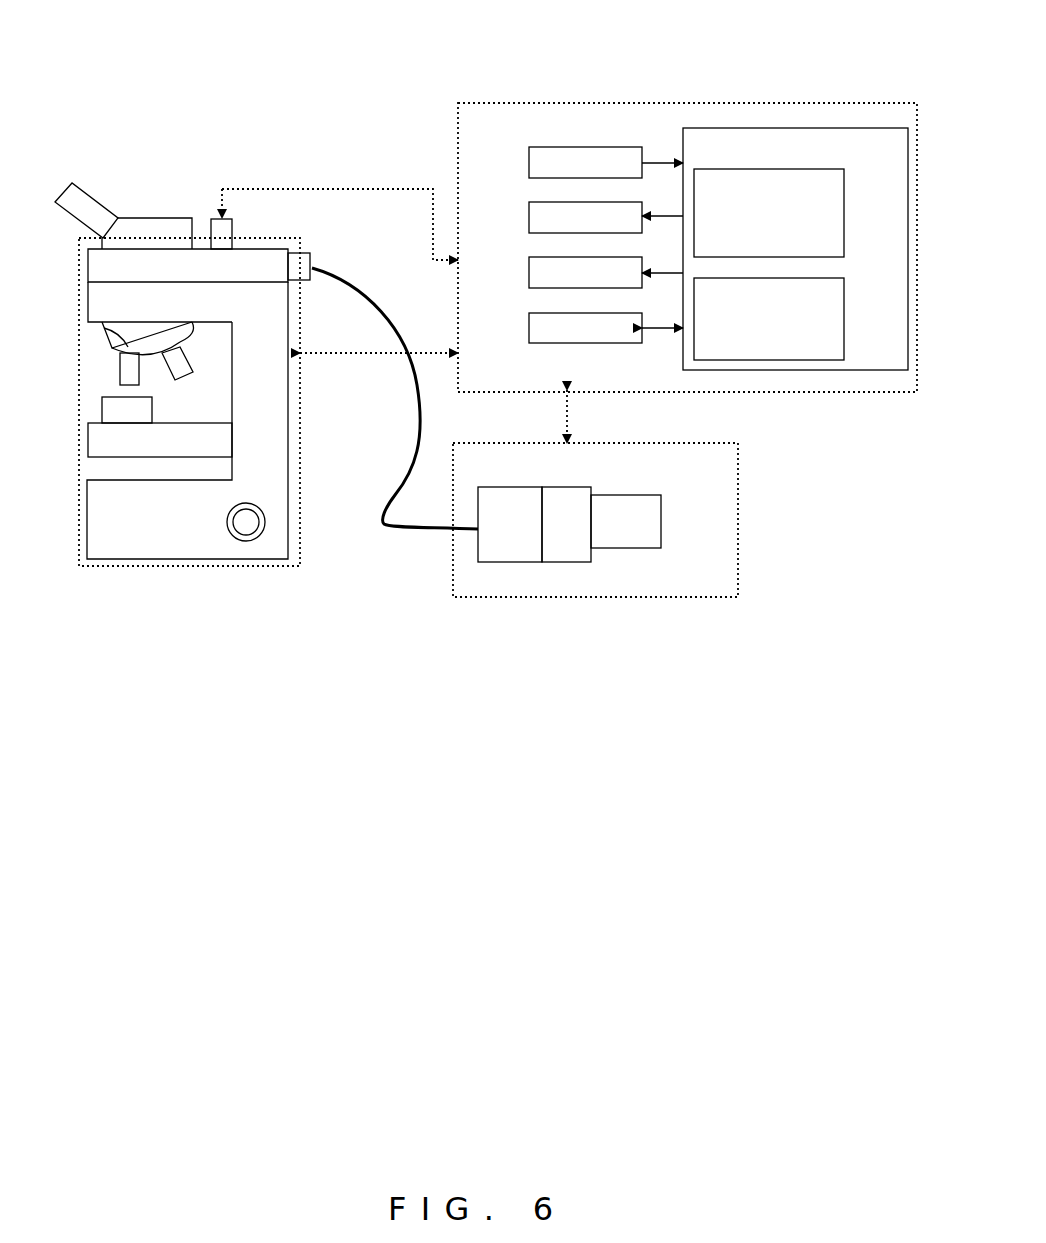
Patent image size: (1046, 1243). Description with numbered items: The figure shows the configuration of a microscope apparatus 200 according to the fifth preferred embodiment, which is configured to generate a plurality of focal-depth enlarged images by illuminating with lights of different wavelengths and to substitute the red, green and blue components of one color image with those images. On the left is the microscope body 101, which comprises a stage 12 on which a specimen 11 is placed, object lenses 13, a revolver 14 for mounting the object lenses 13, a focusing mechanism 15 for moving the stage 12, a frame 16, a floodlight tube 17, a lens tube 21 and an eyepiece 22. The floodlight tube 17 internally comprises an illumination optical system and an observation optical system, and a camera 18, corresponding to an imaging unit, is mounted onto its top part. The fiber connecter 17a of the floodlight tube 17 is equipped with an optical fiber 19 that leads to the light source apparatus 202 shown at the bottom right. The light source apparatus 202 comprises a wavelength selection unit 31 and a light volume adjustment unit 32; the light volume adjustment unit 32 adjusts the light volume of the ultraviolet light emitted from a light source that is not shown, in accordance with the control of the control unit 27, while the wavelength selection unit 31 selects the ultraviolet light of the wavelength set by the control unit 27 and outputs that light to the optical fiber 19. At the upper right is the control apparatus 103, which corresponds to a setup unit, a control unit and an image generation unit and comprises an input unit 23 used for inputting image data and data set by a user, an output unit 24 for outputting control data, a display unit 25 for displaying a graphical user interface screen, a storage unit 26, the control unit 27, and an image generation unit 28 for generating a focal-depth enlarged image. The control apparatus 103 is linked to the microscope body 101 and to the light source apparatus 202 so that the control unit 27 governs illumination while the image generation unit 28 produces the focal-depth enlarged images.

The specimen 11 is at (108, 409).
The stage 12 is at (95, 439).
The object lenses 13 is at (123, 372).
The revolver 14 is at (128, 343).
The focusing mechanism 15 is at (253, 519).
The frame 16 is at (253, 448).
The floodlight tube 17 is at (95, 263).
The fiber connecter 17a is at (312, 254).
The camera 18 is at (225, 227).
The optical fiber 19 is at (400, 322).
The lens tube 21 is at (148, 227).
The eyepiece 22 is at (83, 205).
The input unit 23 is at (528, 165).
The output unit 24 is at (528, 218).
The display unit 25 is at (528, 273).
The storage unit 26 is at (528, 328).
The control unit 27 is at (825, 168).
The image generation unit 28 is at (823, 278).
The wavelength selection unit 31 is at (503, 483).
The light volume adjustment unit 32 is at (568, 483).
The microscope body 101 is at (157, 143).
The control apparatus 103 is at (677, 102).
The microscope apparatus 200 is at (393, 93).
The light source apparatus 202 is at (740, 513).